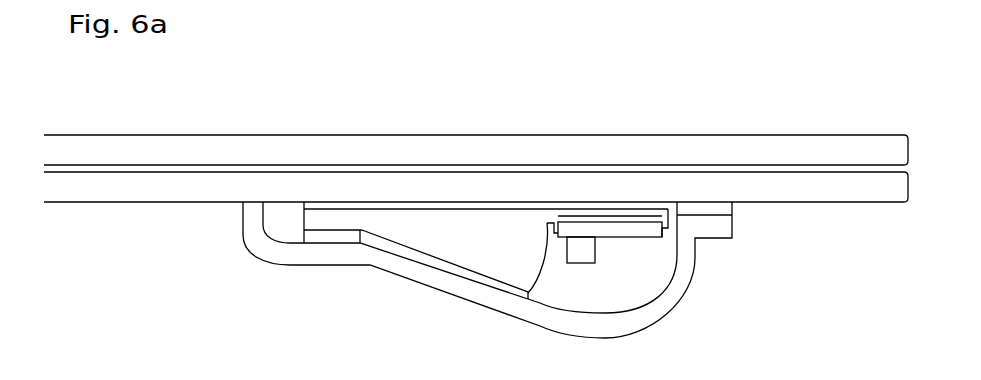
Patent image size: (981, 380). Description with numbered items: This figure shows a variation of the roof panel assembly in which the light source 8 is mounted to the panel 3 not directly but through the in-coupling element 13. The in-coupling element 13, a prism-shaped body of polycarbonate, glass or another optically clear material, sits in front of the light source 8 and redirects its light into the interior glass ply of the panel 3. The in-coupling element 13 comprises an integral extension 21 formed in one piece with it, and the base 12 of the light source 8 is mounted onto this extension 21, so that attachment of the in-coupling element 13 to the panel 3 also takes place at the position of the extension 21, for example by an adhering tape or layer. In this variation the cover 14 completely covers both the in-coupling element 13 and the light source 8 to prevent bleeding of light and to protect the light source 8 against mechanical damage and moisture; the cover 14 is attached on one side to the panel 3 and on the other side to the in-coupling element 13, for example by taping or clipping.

The panel 3 is at (810, 110).
The light source 8 is at (582, 248).
The base 12 is at (617, 228).
The in-coupling element 13 is at (458, 238).
The cover 14 is at (402, 264).
The extension 21 is at (645, 215).